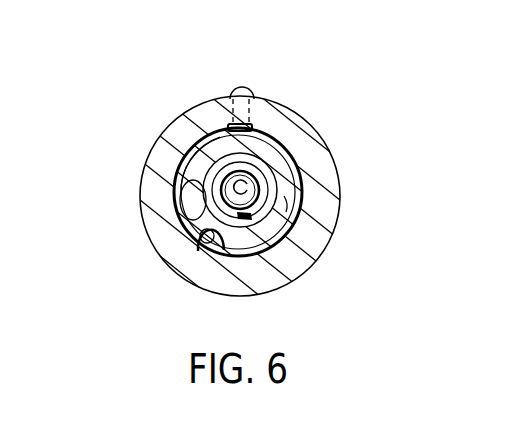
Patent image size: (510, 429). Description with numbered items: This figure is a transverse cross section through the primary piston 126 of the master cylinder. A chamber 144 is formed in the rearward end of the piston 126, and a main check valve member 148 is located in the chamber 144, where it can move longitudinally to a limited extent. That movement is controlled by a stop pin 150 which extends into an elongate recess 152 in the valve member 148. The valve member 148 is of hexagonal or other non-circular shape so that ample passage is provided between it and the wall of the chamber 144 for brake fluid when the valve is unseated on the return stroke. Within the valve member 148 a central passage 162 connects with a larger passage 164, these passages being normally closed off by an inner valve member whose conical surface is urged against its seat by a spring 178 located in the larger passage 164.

The piston 126 is at (157, 93).
The stop pin 150 is at (234, 113).
The elongate recess 152 is at (247, 126).
The larger passage 164 is at (197, 188).
The central passage 162 is at (252, 188).
The main check valve member 148 is at (328, 234).
The chamber 144 is at (199, 250).
The spring 178 is at (250, 216).